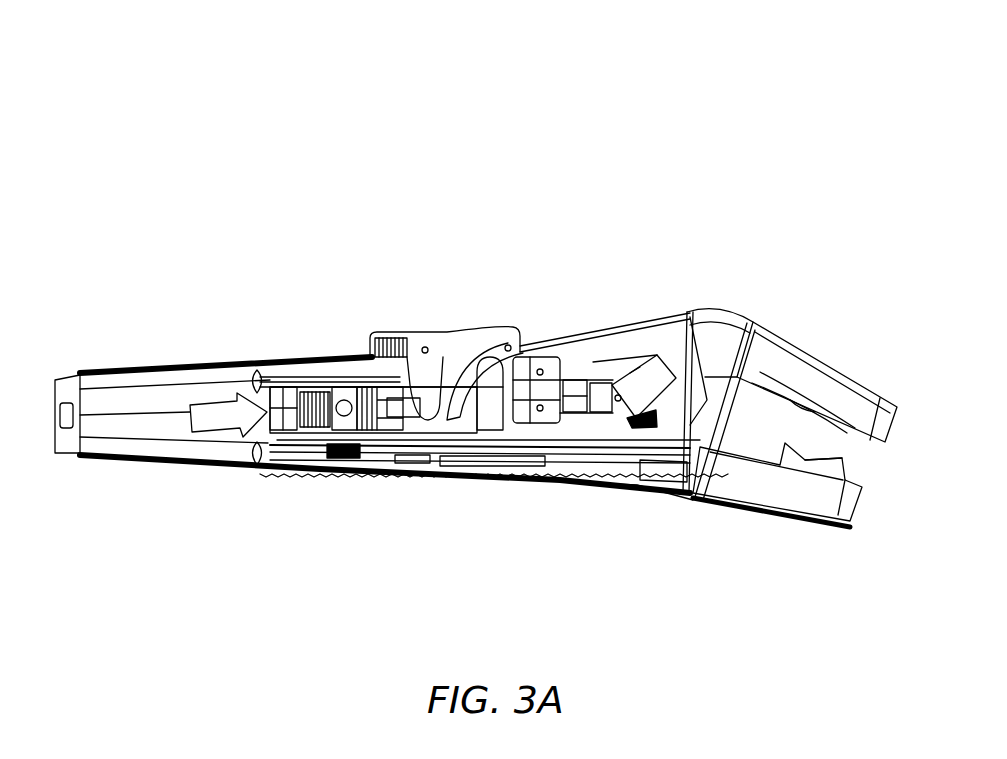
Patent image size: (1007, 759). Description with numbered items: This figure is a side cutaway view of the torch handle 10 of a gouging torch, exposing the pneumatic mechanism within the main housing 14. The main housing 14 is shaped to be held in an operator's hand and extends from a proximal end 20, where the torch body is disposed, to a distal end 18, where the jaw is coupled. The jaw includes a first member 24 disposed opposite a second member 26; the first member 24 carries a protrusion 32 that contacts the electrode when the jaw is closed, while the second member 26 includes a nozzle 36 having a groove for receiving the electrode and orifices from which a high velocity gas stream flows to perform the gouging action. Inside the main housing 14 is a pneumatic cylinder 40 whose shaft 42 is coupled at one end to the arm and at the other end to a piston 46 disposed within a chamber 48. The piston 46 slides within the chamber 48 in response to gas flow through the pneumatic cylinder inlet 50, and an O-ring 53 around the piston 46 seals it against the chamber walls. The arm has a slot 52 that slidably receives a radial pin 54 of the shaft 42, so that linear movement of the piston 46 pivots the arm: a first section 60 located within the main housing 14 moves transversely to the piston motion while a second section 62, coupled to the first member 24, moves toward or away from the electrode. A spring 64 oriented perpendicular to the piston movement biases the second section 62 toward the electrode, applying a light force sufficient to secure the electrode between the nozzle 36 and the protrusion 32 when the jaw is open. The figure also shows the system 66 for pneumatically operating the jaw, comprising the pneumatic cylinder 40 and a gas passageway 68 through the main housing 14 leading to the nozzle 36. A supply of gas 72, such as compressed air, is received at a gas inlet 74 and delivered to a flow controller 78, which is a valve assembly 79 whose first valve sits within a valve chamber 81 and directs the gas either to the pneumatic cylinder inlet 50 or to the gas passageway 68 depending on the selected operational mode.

The torch handle 10 is at (291, 177).
The main housing 14 is at (163, 363).
The distal end 18 is at (735, 298).
The proximal end 20 is at (37, 392).
The first member 24 is at (853, 392).
The second member 26 is at (805, 525).
The protrusion 32 is at (812, 428).
The nozzle 36 is at (850, 470).
The pneumatic cylinder 40 is at (545, 365).
The shaft 42 is at (549, 425).
The piston 46 is at (510, 428).
The chamber 48 is at (542, 368).
The pneumatic cylinder inlet 50 is at (497, 357).
The slot 52 is at (615, 396).
The O-ring 53 is at (527, 425).
The radial pin 54 is at (617, 390).
The first section 60 is at (660, 382).
The second section 62 is at (783, 365).
The spring 64 is at (646, 430).
The system 66 is at (335, 433).
The gas passageway 68 is at (400, 438).
The supply of gas 72 is at (214, 440).
The gas inlet 74 is at (280, 406).
The flow controller 78 is at (340, 392).
The valve assembly 79 is at (375, 436).
The valve chamber 81 is at (317, 430).